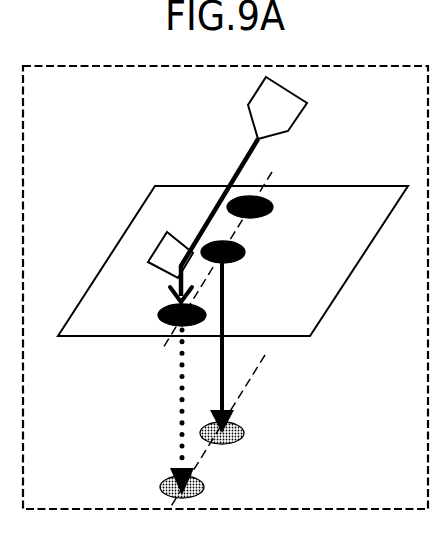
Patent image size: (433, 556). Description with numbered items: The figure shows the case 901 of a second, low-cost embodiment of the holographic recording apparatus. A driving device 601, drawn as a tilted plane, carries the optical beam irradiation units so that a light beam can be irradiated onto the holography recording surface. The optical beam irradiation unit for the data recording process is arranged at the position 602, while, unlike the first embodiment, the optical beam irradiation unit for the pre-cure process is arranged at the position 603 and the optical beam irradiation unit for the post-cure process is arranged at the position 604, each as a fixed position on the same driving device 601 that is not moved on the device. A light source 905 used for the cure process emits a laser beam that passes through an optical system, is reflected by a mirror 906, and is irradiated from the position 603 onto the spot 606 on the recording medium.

The case 901 is at (232, 511).
The driving device 601 is at (118, 338).
The light source 905 is at (247, 107).
The mirror 906 is at (177, 247).
The position 604 is at (273, 207).
The position 602 is at (245, 252).
The position 603 is at (158, 315).
The spot 606 is at (159, 487).